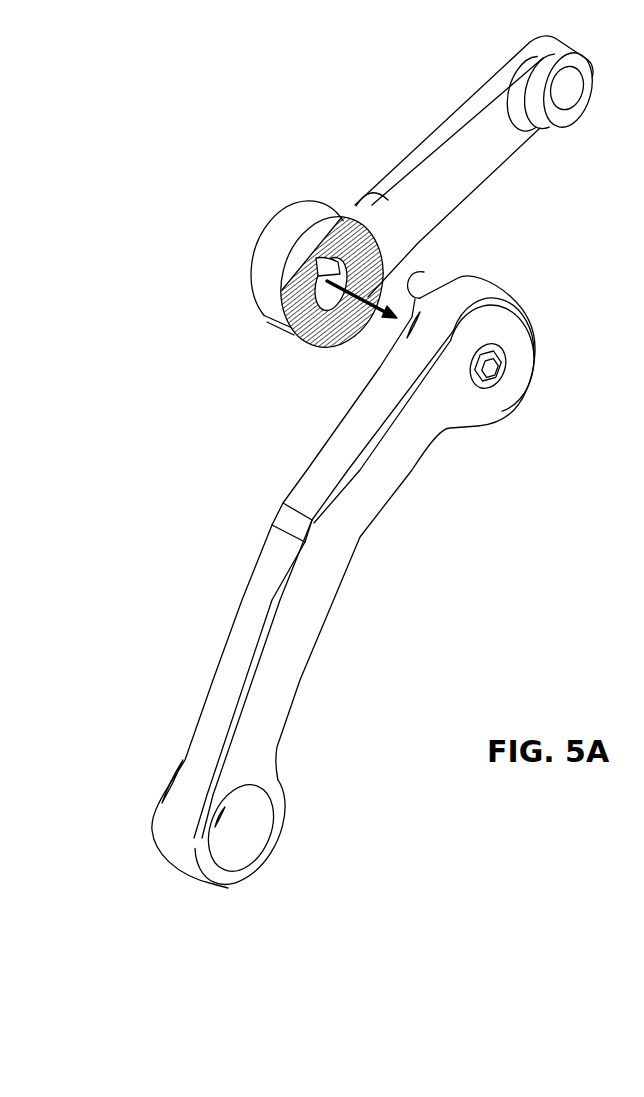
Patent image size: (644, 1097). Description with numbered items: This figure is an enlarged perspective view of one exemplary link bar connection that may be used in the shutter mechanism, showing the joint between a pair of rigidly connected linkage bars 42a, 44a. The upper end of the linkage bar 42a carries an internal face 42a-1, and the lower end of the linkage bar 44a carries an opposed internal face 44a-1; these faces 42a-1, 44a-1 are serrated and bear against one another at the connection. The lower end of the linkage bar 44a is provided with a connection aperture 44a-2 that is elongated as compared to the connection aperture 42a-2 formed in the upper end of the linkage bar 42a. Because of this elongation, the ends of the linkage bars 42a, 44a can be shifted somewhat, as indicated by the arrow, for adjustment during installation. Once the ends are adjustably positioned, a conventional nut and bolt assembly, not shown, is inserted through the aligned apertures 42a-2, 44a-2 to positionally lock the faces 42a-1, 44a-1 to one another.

The linkage bar 42a is at (388, 548).
The internal face 42a-1 is at (424, 272).
The connection aperture 42a-2 is at (492, 374).
The linkage bar 44a is at (313, 273).
The internal face 44a-1 is at (320, 343).
The connection aperture 44a-2 is at (342, 217).